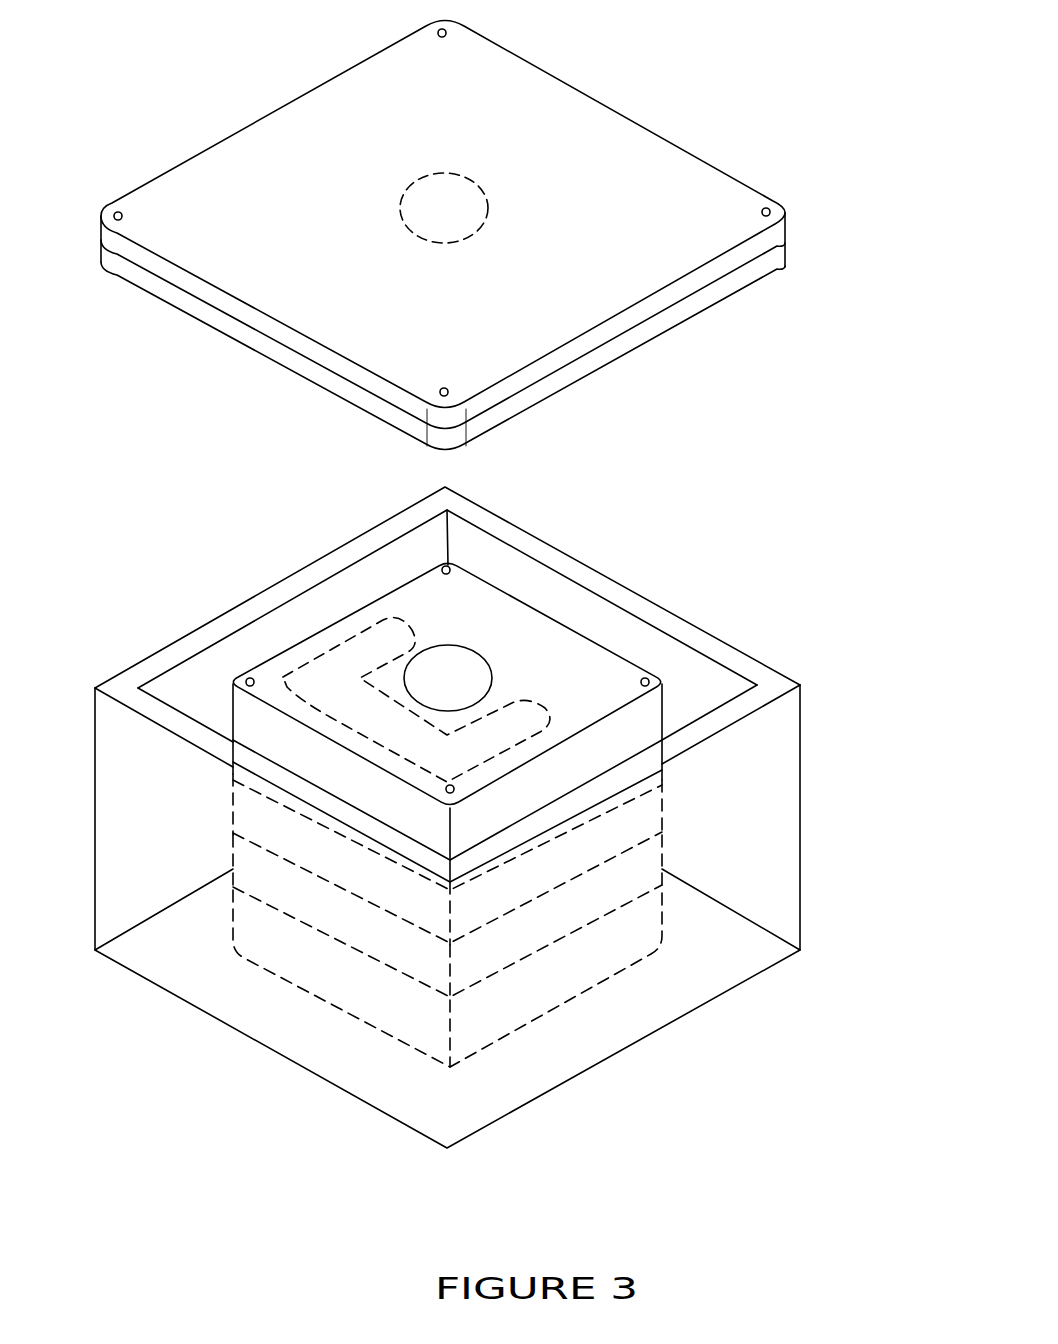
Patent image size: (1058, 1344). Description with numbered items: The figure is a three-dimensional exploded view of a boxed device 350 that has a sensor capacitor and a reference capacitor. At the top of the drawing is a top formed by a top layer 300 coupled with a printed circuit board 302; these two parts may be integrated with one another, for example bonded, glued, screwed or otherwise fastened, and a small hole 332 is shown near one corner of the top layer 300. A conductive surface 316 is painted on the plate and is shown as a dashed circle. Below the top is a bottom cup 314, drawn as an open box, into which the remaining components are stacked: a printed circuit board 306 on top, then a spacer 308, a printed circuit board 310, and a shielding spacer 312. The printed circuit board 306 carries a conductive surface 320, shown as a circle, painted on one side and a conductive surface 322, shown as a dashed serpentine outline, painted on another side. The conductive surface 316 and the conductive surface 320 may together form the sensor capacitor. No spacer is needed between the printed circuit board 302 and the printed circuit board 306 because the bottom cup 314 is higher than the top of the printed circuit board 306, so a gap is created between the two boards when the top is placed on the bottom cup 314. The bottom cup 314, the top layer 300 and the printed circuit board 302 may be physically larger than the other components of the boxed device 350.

The top layer 300 is at (778, 232).
The printed circuit board 302 is at (773, 258).
The printed circuit board 306 is at (640, 720).
The spacer 308 is at (640, 815).
The printed circuit board 310 is at (640, 868).
The shielding spacer 312 is at (640, 922).
The bottom cup 314 is at (730, 942).
The conductive surface 316 is at (467, 177).
The conductive surface 320 is at (490, 670).
The conductive surface 322 is at (325, 653).
The mounting hole 332 is at (446, 28).
The boxed device 350 is at (698, 1103).